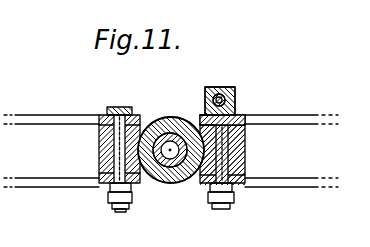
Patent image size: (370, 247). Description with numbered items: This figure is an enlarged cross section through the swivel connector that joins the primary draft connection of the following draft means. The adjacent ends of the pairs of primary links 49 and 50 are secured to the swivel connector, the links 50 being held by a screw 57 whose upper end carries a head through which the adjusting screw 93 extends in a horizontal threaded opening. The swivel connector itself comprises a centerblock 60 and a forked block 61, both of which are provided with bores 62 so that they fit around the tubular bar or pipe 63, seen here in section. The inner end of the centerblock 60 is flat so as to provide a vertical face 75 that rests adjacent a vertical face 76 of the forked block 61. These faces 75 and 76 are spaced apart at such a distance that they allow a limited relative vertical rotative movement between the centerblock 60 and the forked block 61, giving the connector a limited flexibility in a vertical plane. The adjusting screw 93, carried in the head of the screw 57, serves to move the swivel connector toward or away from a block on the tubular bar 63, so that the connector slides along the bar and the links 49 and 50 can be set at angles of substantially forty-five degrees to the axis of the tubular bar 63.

The primary links 49 is at (77, 120).
The primary links 50 is at (300, 120).
The screw 57 is at (235, 107).
The centerblock 60 is at (155, 181).
The forked block 61 is at (242, 121).
The bores 62 is at (181, 181).
The tubular bar 63 is at (167, 115).
The vertical face 75 is at (196, 125).
The vertical face 76 is at (245, 150).
The adjusting screw 93 is at (222, 90).